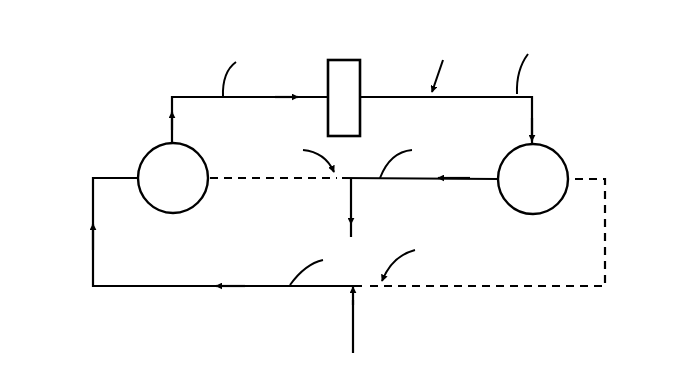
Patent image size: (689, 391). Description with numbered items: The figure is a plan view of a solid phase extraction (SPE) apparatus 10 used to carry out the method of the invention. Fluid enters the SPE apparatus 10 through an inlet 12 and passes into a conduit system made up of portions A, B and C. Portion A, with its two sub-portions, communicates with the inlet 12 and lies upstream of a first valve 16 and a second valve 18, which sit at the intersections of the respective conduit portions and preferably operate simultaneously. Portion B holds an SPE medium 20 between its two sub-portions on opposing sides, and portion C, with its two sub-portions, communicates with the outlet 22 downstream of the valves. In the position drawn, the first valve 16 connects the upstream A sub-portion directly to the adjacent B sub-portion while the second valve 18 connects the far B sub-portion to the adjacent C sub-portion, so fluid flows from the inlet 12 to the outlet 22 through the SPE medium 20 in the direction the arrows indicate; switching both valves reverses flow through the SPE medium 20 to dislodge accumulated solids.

The SPE apparatus 10 is at (154, 46).
The inlet 12 is at (350, 320).
The first valve 16 is at (147, 150).
The second valve 18 is at (550, 145).
The SPE medium 20 is at (337, 59).
The outlet 22 is at (348, 200).